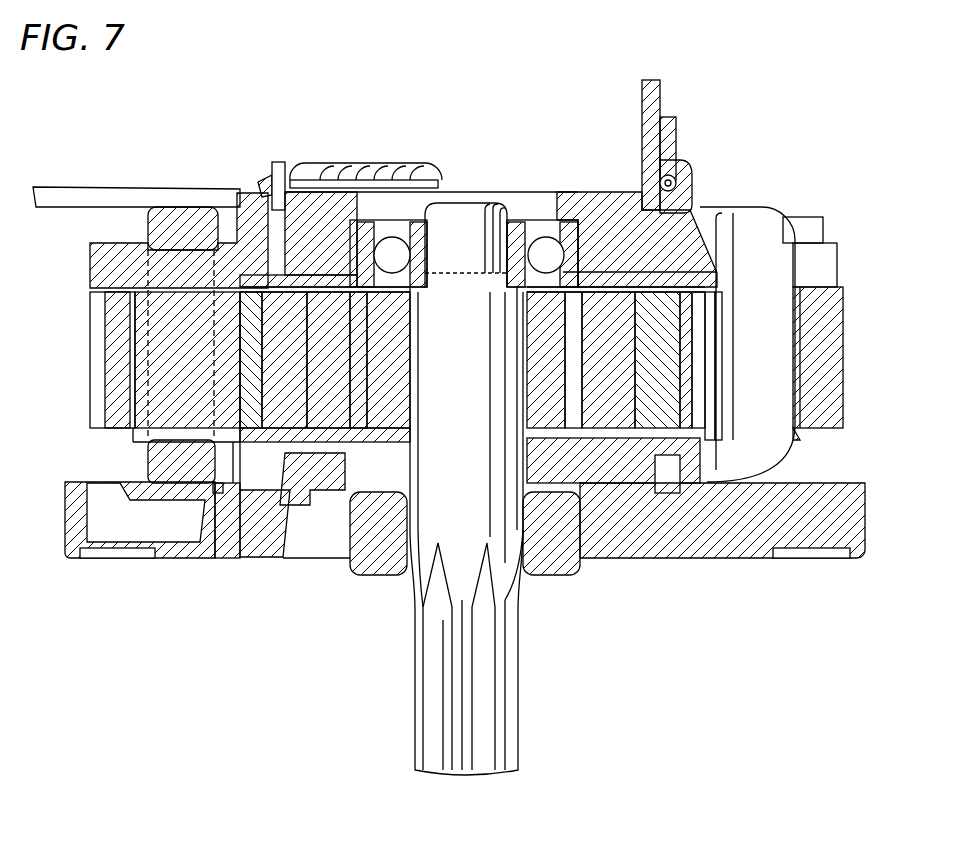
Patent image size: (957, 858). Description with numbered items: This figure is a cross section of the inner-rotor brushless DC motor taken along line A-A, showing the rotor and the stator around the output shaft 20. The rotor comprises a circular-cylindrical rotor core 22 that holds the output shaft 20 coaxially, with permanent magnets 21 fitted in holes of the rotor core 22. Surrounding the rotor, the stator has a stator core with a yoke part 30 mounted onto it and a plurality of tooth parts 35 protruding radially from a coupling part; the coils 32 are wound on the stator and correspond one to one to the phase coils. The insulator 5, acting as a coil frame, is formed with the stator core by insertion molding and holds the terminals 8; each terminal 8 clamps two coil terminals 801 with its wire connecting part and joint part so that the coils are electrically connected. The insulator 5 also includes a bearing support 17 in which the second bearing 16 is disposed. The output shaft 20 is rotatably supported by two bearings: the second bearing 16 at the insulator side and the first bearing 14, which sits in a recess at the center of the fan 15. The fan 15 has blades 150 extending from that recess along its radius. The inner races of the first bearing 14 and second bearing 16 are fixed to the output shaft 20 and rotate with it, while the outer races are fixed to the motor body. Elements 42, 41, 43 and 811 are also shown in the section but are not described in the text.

The circuit board / plate 42 is at (104, 197).
The coil 32 is at (180, 215).
The bearing holder block 41 is at (317, 280).
The coil / cover plate 43 is at (418, 183).
The bearing support 17 is at (470, 213).
The second bearing 16 is at (542, 222).
The housing portion (member 5) 811 is at (588, 190).
The terminal 8 is at (650, 93).
The coil terminal 801 is at (683, 180).
The yoke part 30 is at (115, 372).
The tooth part 35 is at (155, 338).
The permanent magnet 21 is at (267, 378).
The rotor core 22 is at (340, 428).
The insulator 5 is at (215, 470).
The blade 150 is at (95, 517).
The fan 15 is at (175, 553).
The first bearing 14 is at (548, 563).
The output shaft 20 is at (510, 680).